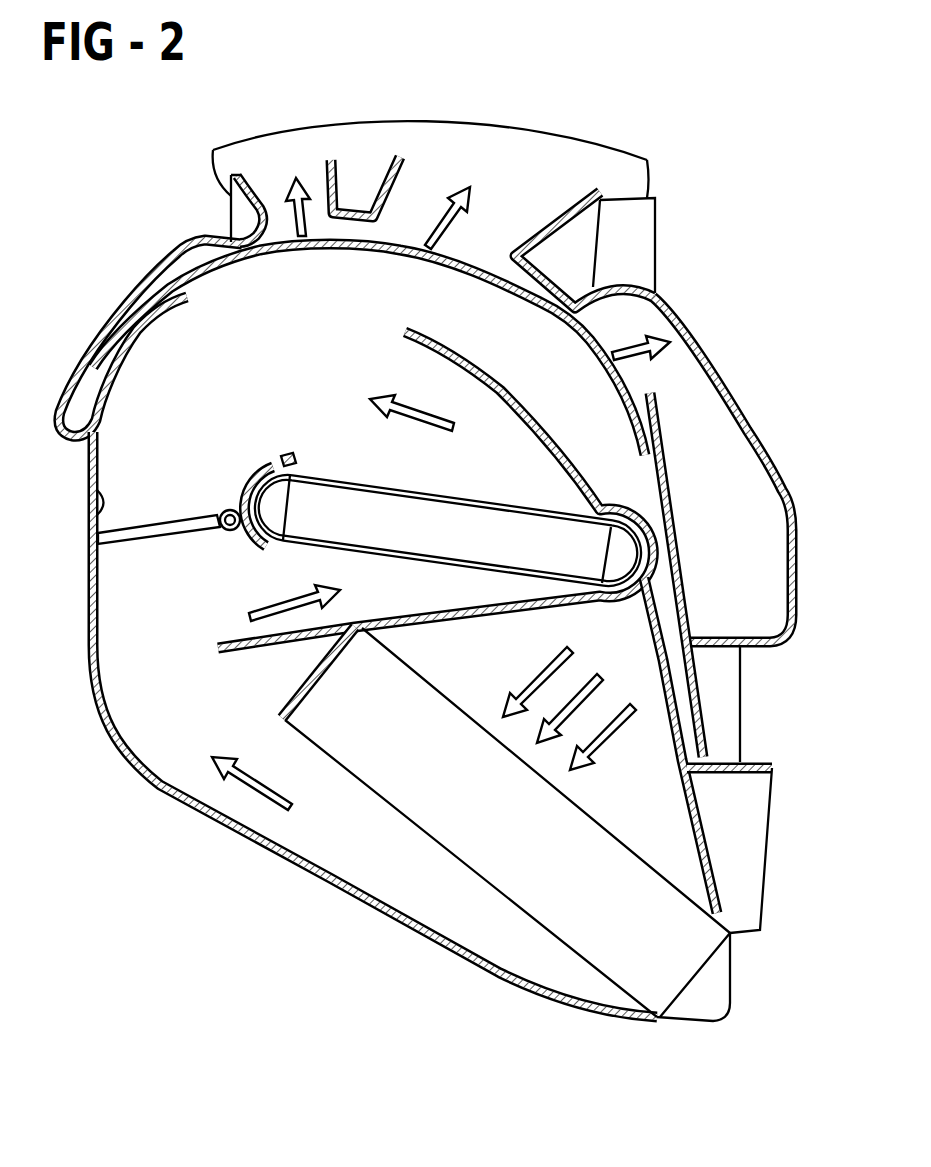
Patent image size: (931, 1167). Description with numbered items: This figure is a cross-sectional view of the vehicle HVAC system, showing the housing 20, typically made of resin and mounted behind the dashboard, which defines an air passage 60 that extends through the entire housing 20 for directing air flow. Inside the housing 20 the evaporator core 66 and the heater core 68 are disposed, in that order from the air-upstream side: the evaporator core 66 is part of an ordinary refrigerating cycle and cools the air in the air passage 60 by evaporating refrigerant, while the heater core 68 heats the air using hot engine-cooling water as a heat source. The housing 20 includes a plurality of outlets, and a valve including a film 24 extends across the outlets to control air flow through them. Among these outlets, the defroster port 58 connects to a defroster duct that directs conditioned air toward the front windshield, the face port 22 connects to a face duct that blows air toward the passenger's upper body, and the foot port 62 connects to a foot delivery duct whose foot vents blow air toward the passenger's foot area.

The housing 20 is at (103, 712).
The face port 22 is at (558, 212).
The film 24 is at (183, 253).
The defroster port 58 is at (243, 190).
The air passage 60 is at (93, 488).
The foot port 62 is at (788, 586).
The evaporator core 66 is at (597, 973).
The heater core 68 is at (343, 468).